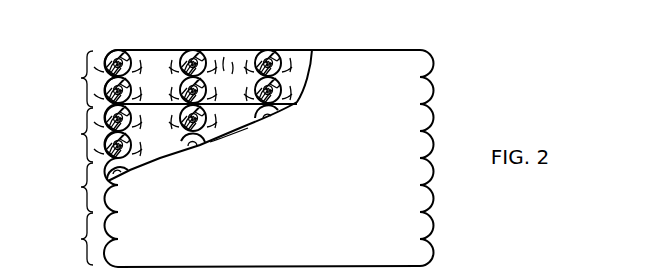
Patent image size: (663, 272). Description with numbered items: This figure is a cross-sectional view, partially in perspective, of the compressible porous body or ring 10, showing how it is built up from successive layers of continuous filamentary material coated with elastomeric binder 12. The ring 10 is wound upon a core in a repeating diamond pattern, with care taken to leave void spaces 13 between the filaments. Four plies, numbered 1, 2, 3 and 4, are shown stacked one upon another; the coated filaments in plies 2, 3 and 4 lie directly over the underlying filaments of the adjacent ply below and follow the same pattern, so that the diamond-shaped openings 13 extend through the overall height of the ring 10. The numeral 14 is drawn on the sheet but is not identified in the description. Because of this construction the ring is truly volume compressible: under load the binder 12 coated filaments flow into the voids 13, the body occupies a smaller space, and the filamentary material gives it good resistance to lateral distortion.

The compressible porous body or ring 10 is at (301, 140).
The elastomeric binder 12 is at (273, 52).
The void spaces 13 is at (228, 59).
The coil turn 14 is at (189, 61).
The ply 1 is at (78, 239).
The ply 2 is at (78, 187).
The ply 3 is at (78, 135).
The ply 4 is at (78, 79).